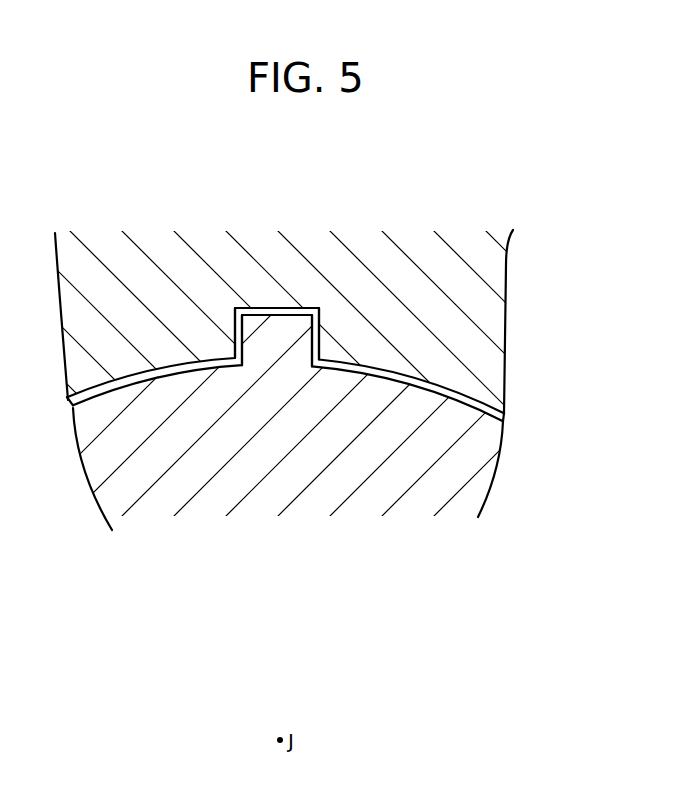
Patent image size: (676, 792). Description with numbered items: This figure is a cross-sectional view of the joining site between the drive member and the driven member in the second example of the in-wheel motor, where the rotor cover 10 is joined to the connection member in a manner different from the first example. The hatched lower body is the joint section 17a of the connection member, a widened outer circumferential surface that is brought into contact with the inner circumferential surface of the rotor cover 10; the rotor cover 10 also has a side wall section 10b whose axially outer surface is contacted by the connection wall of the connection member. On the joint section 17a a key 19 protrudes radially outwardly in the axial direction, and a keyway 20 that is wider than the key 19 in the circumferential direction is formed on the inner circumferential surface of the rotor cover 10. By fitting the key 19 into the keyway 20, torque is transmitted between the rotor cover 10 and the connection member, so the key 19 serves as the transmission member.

The rotor cover 10 is at (315, 247).
The side wall section 10b is at (445, 273).
The key 19 is at (278, 340).
The keyway 20 is at (262, 307).
The joint section 17a is at (267, 457).